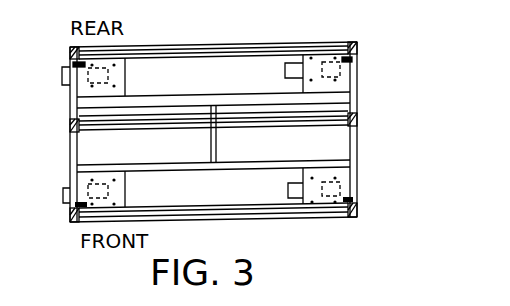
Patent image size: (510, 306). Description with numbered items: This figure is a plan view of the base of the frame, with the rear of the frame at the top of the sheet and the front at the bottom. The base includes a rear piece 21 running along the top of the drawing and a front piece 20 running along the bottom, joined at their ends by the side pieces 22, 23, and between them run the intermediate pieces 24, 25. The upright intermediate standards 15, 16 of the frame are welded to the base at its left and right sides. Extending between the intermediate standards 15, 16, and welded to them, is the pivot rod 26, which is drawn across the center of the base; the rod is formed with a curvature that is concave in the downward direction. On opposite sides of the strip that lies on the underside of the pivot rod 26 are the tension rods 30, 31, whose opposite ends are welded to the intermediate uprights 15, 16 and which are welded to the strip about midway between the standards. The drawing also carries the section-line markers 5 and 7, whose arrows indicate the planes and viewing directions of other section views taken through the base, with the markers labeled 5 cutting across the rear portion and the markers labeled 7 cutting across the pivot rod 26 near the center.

The section line 5- 5 is at (337, 70).
The section line 7- 7 is at (134, 143).
The intermediate standard 15 is at (72, 118).
The intermediate standard 16 is at (357, 106).
The front piece 20 is at (300, 221).
The rear piece 21 is at (143, 46).
The side piece 22 is at (71, 180).
The side piece 23 is at (350, 177).
The intermediate piece 24 is at (148, 97).
The intermediate piece 25 is at (172, 171).
The pivot rod 26 is at (156, 123).
The tension rod 30 is at (234, 137).
The tension rod 31 is at (237, 100).